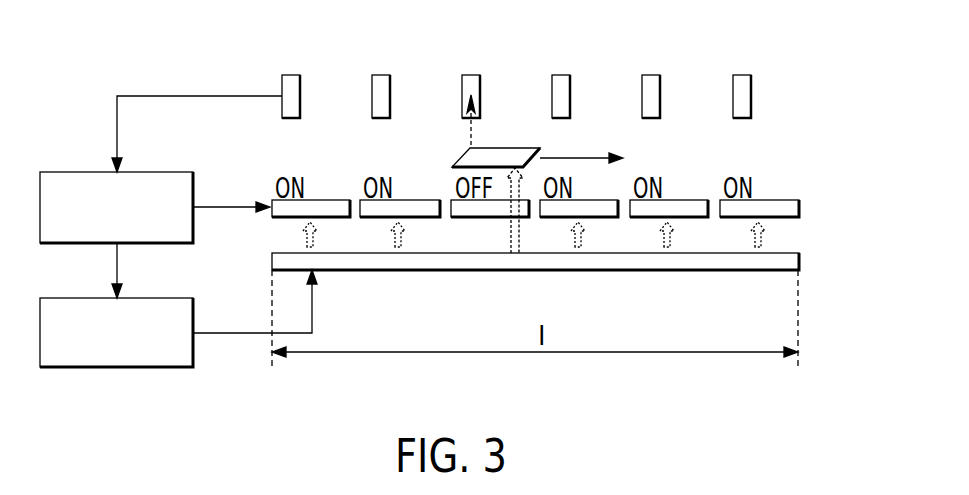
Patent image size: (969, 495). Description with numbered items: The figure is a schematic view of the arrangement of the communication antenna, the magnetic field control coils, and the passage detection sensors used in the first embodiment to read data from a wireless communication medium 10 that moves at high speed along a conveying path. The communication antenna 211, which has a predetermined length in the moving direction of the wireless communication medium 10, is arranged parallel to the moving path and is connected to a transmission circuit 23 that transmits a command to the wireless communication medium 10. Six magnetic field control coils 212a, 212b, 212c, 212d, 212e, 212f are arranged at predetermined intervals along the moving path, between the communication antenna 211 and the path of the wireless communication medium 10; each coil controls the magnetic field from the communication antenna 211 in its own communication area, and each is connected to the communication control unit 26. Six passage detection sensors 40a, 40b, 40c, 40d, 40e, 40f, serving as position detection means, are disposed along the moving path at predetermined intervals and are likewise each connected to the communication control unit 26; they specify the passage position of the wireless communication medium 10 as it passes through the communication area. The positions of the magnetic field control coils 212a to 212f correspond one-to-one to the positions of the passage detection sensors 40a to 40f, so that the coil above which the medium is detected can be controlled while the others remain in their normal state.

The communication control unit 26 is at (72, 172).
The transmission circuit 23 is at (72, 367).
The passage detection sensor 40a is at (291, 75).
The passage detection sensor 40b is at (381, 75).
The passage detection sensor 40c is at (471, 75).
The passage detection sensor 40d is at (561, 75).
The passage detection sensor 40e is at (651, 75).
The passage detection sensor 40f is at (742, 75).
The wireless communication medium 10 is at (507, 148).
The communication antenna 211 is at (800, 260).
The magnetic field control coil 212a is at (342, 217).
The magnetic field control coil 212b is at (427, 217).
The magnetic field control coil 212c is at (502, 217).
The magnetic field control coil 212d is at (600, 217).
The magnetic field control coil 212e is at (690, 217).
The magnetic field control coil 212f is at (780, 217).